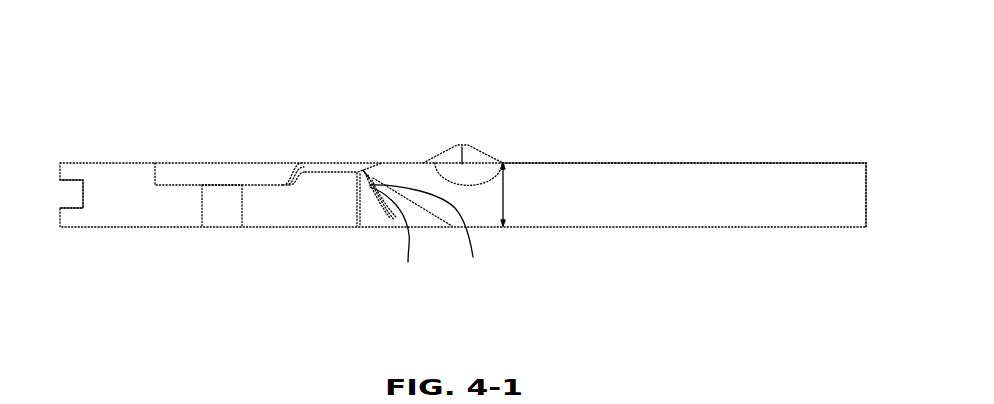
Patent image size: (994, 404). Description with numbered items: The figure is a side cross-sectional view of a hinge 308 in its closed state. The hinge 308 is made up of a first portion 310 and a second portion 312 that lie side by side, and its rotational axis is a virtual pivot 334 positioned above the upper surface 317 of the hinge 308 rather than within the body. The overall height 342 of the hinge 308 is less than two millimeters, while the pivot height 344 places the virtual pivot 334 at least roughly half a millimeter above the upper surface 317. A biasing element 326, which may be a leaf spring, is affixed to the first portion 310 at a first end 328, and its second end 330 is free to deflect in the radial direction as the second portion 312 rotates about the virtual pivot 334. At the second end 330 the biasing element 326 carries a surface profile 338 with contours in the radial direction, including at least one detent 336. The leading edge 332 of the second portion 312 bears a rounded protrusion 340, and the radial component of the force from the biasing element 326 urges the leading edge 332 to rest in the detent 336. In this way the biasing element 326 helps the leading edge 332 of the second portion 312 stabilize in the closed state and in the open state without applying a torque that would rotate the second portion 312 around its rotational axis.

The hinge 308 is at (762, 52).
The first portion 310 is at (104, 206).
The second portion 312 is at (616, 199).
The upper surface 317 is at (568, 161).
The biasing element 326 is at (298, 162).
The first end 328 is at (177, 165).
The leading edge 332 is at (363, 140).
The virtual pivot 334 is at (462, 138).
The detent 336 is at (397, 230).
The surface profile 338 is at (363, 170).
The rounded protrusion 340 is at (432, 229).
The height 342 is at (503, 190).
The pivot height 344 is at (476, 150).
The second end 330 is at (370, 224).